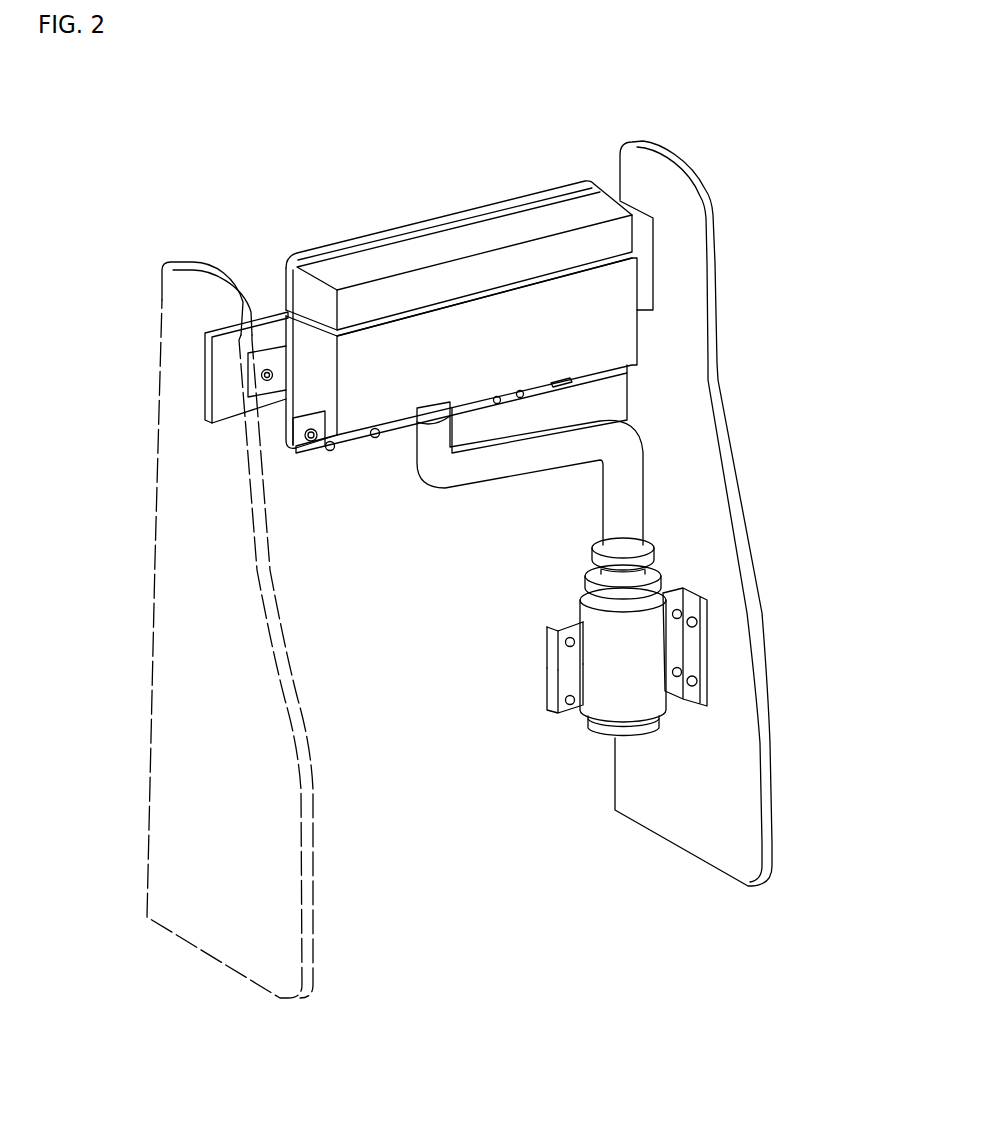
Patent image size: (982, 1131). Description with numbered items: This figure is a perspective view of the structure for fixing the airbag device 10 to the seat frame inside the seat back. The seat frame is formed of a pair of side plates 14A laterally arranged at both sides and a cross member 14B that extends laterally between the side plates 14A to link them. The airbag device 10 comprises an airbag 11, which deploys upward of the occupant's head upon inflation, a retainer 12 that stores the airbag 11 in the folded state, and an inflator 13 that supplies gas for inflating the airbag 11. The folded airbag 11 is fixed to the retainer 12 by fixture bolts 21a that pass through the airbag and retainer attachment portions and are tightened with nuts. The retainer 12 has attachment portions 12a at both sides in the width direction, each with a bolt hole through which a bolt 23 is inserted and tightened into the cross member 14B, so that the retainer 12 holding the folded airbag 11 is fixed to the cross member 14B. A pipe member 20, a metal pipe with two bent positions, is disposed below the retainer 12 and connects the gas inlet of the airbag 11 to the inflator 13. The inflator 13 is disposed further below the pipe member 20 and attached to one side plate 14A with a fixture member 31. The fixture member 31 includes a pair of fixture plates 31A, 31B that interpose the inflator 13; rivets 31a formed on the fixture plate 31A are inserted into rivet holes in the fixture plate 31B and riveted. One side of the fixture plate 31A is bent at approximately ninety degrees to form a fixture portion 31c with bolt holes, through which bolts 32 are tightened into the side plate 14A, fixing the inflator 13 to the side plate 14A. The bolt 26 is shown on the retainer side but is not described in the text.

The airbag device 10 is at (490, 822).
The airbag 11 is at (452, 250).
The retainer 12 is at (606, 339).
The attachment portion 12a is at (276, 398).
The inflator 13 is at (650, 597).
The side plate 14A is at (148, 840).
The cross member 14B is at (242, 367).
The pipe member 20 is at (470, 490).
The fixture bolt 21a is at (373, 437).
The bolt 23 is at (275, 374).
The bolt 26 is at (300, 457).
The fixture member 31 is at (621, 671).
The fixture plate 31A is at (550, 653).
The fixture plate 31B is at (577, 680).
The rivet 31a is at (567, 637).
The fixture portion 31c is at (690, 700).
The bolt 32 is at (700, 623).